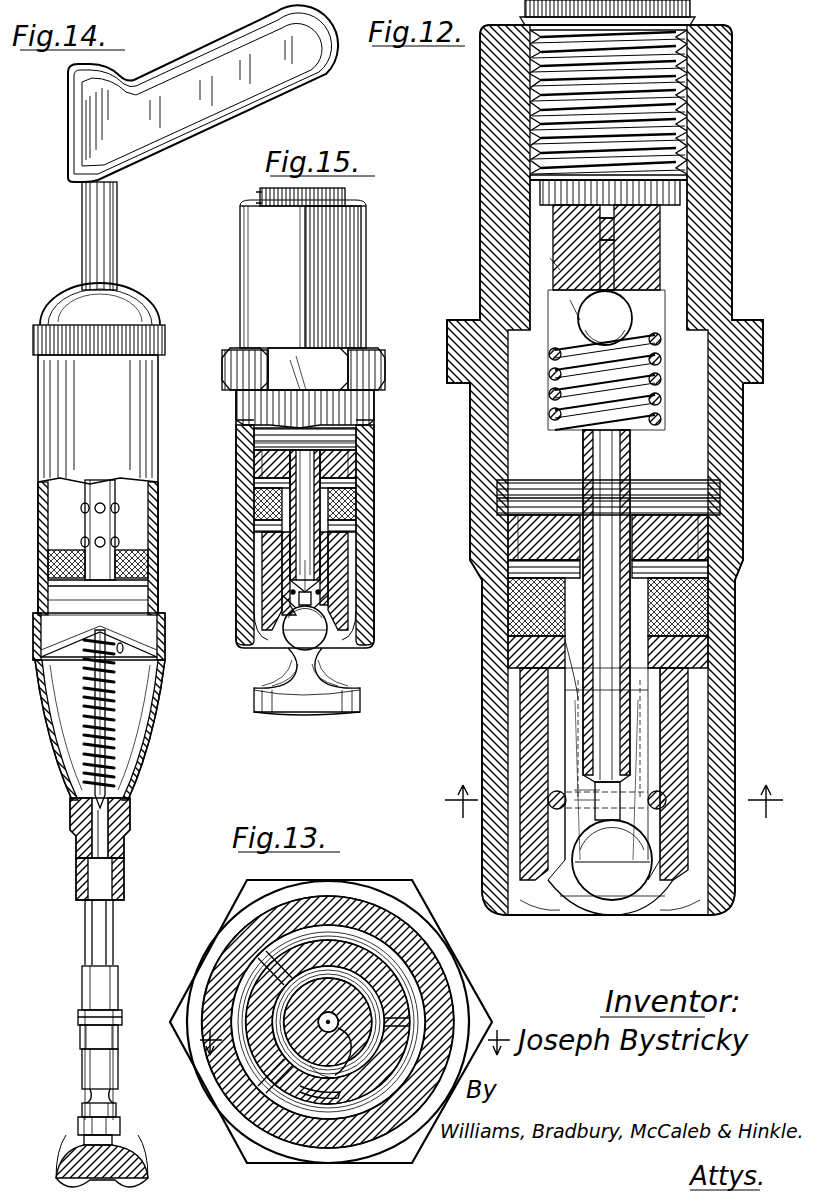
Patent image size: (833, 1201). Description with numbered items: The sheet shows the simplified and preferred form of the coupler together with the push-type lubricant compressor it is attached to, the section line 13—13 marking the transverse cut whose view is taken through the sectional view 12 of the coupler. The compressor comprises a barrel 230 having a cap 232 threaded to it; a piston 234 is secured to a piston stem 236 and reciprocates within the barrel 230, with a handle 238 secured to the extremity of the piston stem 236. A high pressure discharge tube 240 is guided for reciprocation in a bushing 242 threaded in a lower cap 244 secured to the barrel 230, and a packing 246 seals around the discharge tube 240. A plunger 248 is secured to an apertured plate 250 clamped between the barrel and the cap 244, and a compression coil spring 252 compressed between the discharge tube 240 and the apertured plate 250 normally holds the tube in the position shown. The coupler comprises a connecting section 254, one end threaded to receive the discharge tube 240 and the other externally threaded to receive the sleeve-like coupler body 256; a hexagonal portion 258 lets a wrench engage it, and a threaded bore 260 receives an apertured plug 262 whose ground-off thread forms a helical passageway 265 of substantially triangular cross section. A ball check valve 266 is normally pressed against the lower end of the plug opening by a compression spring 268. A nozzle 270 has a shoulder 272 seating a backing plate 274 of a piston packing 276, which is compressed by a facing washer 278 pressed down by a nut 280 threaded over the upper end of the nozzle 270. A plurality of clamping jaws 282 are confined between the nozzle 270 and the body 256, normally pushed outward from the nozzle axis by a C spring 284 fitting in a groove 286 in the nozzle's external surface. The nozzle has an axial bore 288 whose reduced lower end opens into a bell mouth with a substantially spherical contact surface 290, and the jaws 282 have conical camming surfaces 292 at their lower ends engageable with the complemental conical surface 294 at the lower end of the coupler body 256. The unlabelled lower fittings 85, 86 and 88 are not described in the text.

In FIG. 14, the handle 238 is at (74, 137).
In FIG. 14, the piston stem 236 is at (110, 235).
In FIG. 14, the cap 232 is at (60, 305).
In FIG. 14, the barrel 230 is at (152, 425).
In FIG. 15, the barrel 230 is at (271, 518).
In FIG. 14, the piston 234 is at (150, 560).
In FIG. 14, the apertured plate 250 is at (150, 666).
In FIG. 14, the compression coil spring 252 is at (125, 760).
In FIG. 14, the plunger 248 is at (115, 708).
In FIG. 14, the lower cap 244 is at (68, 768).
In FIG. 14, the packing 246 is at (72, 826).
In FIG. 14, the bushing 242 is at (128, 842).
In FIG. 14, the high pressure discharge tube 240 is at (118, 885).
In FIG. 15, the high pressure discharge tube 240 is at (262, 193).
In FIG. 12, the high pressure discharge tube 240 is at (695, 10).
In FIG. 14, the connecting section 254 is at (86, 982).
In FIG. 15, the connecting section 254 is at (250, 282).
In FIG. 12, the connecting section 254 is at (712, 212).
In FIG. 14, the hexagonal portion 258 is at (80, 1016).
In FIG. 15, the hexagonal portion 258 is at (230, 366).
In FIG. 13, the hexagonal portion 258 is at (200, 990).
In FIG. 12, the hexagonal portion 258 is at (725, 322).
In FIG. 14, the coupling 85 is at (74, 1042).
In FIG. 14, the coupler body 256 is at (88, 1062).
In FIG. 15, the coupler body 256 is at (378, 443).
In FIG. 13, the coupler body 256 is at (232, 948).
In FIG. 12, the coupler body 256 is at (730, 512).
In FIG. 14, the fitting 86 is at (82, 1108).
In FIG. 15, the fitting 86 is at (308, 712).
In FIG. 14, the bottom member 88 is at (68, 1160).
In FIG. 12, the apertured plug 262 is at (630, 205).
In FIG. 12, the helical passageway 265 is at (665, 260).
In FIG. 12, the threaded bore 260 is at (650, 310).
In FIG. 12, the ball check valve 266 is at (560, 330).
In FIG. 12, the compression spring 268 is at (550, 355).
In FIG. 15, the nut 280 is at (358, 468).
In FIG. 12, the nut 280 is at (700, 540).
In FIG. 15, the facing washer 278 is at (374, 486).
In FIG. 12, the facing washer 278 is at (708, 570).
In FIG. 15, the piston packing 276 is at (374, 512).
In FIG. 12, the piston packing 276 is at (708, 600).
In FIG. 15, the backing plate 274 is at (374, 537).
In FIG. 12, the backing plate 274 is at (520, 656).
In FIG. 12, the shoulder 272 is at (708, 665).
In FIG. 15, the nozzle 270 is at (322, 568).
In FIG. 13, the nozzle 270 is at (312, 1000).
In FIG. 12, the nozzle 270 is at (648, 706).
In FIG. 15, the clamping jaws 282 is at (262, 592).
In FIG. 13, the clamping jaws 282 is at (332, 945).
In FIG. 12, the clamping jaws 282 is at (690, 742).
In FIG. 15, the axial bore 288 is at (298, 560).
In FIG. 13, the axial bore 288 is at (320, 1095).
In FIG. 12, the axial bore 288 is at (595, 703).
In FIG. 13, the groove 286 is at (362, 1002).
In FIG. 12, the groove 286 is at (668, 796).
In FIG. 15, the C spring 284 is at (286, 604).
In FIG. 13, the C spring 284 is at (290, 1050).
In FIG. 12, the C spring 284 is at (600, 808).
In FIG. 15, the spherical contact surface 290 is at (326, 612).
In FIG. 12, the spherical contact surface 290 is at (585, 843).
In FIG. 12, the conical camming surfaces 292 is at (608, 912).
In FIG. 15, the conical surface 294 is at (352, 652).
In FIG. 12, the conical surface 294 is at (512, 912).
In FIG. 13, the section line 12- 12 is at (356, 1028).
In FIG. 12, the section line 13- 13 is at (614, 814).